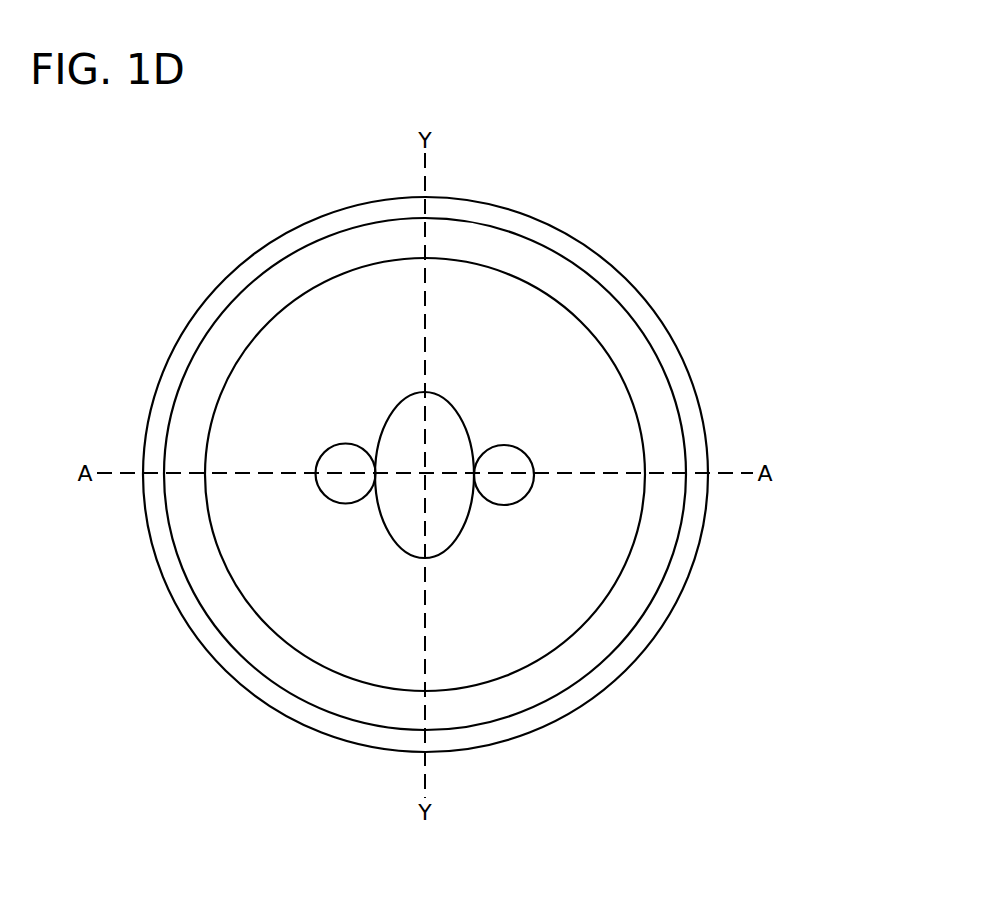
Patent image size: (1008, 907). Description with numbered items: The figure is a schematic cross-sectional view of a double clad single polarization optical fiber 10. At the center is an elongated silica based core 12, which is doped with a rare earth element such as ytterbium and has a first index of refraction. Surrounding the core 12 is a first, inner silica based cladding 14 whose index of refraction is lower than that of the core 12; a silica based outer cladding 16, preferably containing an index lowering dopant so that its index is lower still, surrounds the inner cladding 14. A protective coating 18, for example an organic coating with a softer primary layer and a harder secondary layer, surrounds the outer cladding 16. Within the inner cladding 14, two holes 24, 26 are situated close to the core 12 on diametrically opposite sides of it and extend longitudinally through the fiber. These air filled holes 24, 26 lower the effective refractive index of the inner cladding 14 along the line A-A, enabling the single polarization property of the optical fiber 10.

The double clad single polarization optical fiber 10 is at (794, 216).
The core 12 is at (397, 429).
The first cladding 14 is at (452, 273).
The outer cladding 16 is at (522, 264).
The protective coating 18 is at (612, 278).
The hole 24 is at (333, 455).
The hole 26 is at (500, 454).